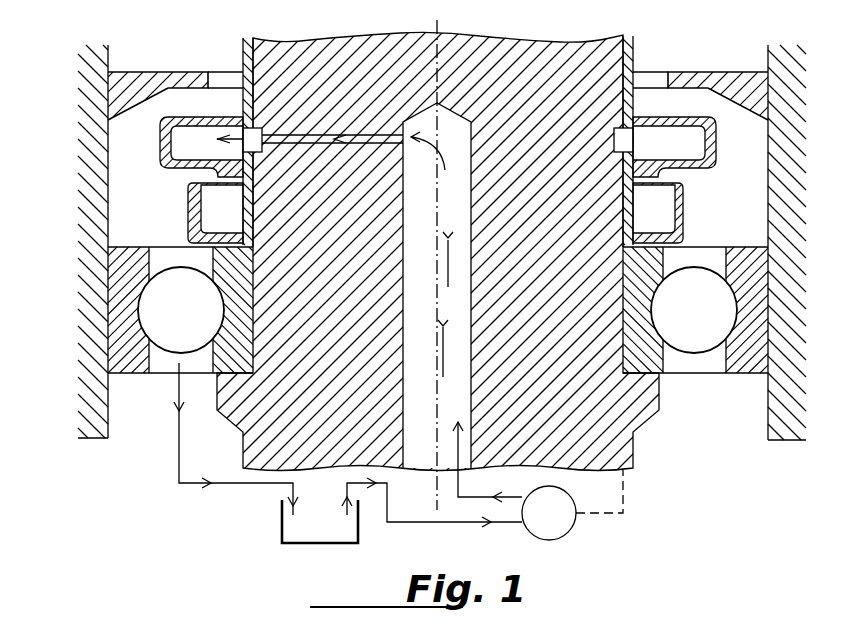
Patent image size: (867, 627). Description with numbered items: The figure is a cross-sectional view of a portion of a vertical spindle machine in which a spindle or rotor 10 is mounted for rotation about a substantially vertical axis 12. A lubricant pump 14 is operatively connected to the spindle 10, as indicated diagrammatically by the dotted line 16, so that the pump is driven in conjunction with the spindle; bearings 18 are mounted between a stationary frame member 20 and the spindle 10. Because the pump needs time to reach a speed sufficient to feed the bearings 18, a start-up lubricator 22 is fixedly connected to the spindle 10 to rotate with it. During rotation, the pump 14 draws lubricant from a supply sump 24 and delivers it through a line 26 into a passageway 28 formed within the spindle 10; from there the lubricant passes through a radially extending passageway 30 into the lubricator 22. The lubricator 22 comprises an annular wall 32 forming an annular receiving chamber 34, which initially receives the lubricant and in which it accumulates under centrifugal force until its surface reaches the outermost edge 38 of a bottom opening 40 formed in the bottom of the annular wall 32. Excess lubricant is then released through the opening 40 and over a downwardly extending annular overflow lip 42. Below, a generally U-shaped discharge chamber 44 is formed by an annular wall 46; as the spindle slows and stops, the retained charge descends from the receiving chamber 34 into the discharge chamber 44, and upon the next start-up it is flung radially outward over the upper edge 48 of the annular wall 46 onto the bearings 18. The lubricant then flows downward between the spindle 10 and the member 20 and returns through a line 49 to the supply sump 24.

The spindle 10 is at (563, 63).
The vertical axis 12 is at (447, 19).
The lubricant pump 14 is at (568, 527).
The operative connection 16 is at (625, 493).
The bearings 18 is at (172, 337).
The frame member 20 is at (97, 115).
The start-up lubricator 22 is at (193, 100).
The supply sump 24 is at (281, 527).
The line 26 is at (462, 523).
The passageway 28 is at (408, 226).
The radially extending passageway 30 is at (313, 135).
The annular wall 32 is at (712, 134).
The annular receiving chamber 34 is at (180, 143).
The outermost edge 38 is at (215, 213).
The bottom opening 40 is at (639, 172).
The annular overflow lip 42 is at (660, 173).
The discharge chamber 44 is at (665, 211).
The annular wall 46 is at (686, 240).
The upper edge 48 is at (682, 181).
The line 49 is at (195, 487).